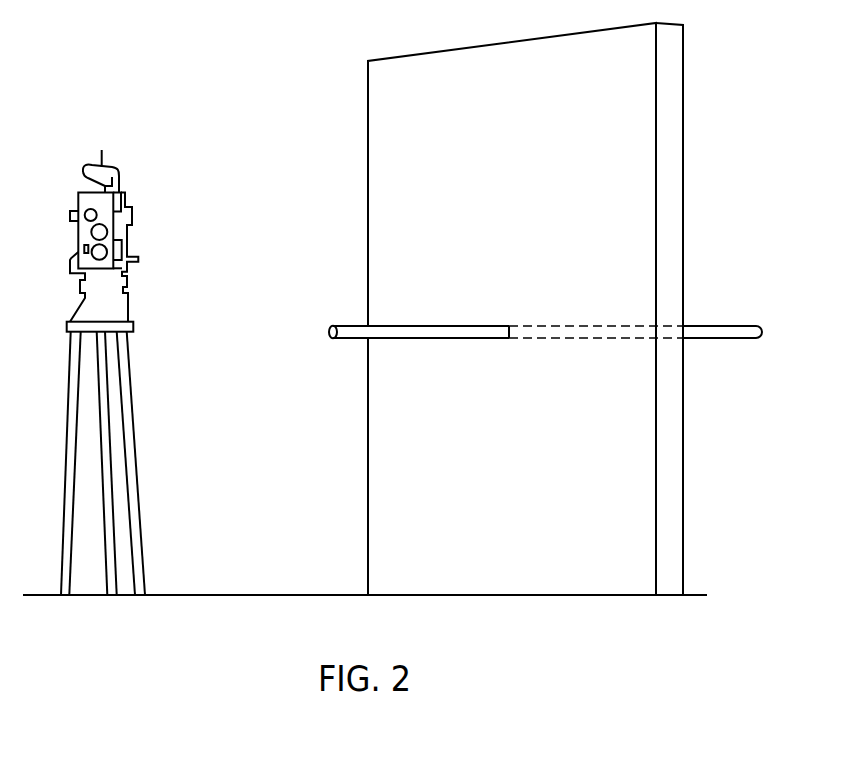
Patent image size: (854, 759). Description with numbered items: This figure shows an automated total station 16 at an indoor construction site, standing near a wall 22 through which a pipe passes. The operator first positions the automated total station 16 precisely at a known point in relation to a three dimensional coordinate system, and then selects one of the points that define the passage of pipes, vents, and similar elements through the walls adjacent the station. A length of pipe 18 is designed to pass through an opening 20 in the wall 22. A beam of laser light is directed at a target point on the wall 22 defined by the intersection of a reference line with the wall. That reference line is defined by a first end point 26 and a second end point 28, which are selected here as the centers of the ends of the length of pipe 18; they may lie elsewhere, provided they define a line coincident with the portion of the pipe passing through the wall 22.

The automated total station 16 is at (148, 372).
The length of pipe 18 is at (442, 331).
The opening 20 is at (509, 330).
The wall 22 is at (673, 97).
The first end point 26 is at (763, 326).
The second end point 28 is at (327, 332).